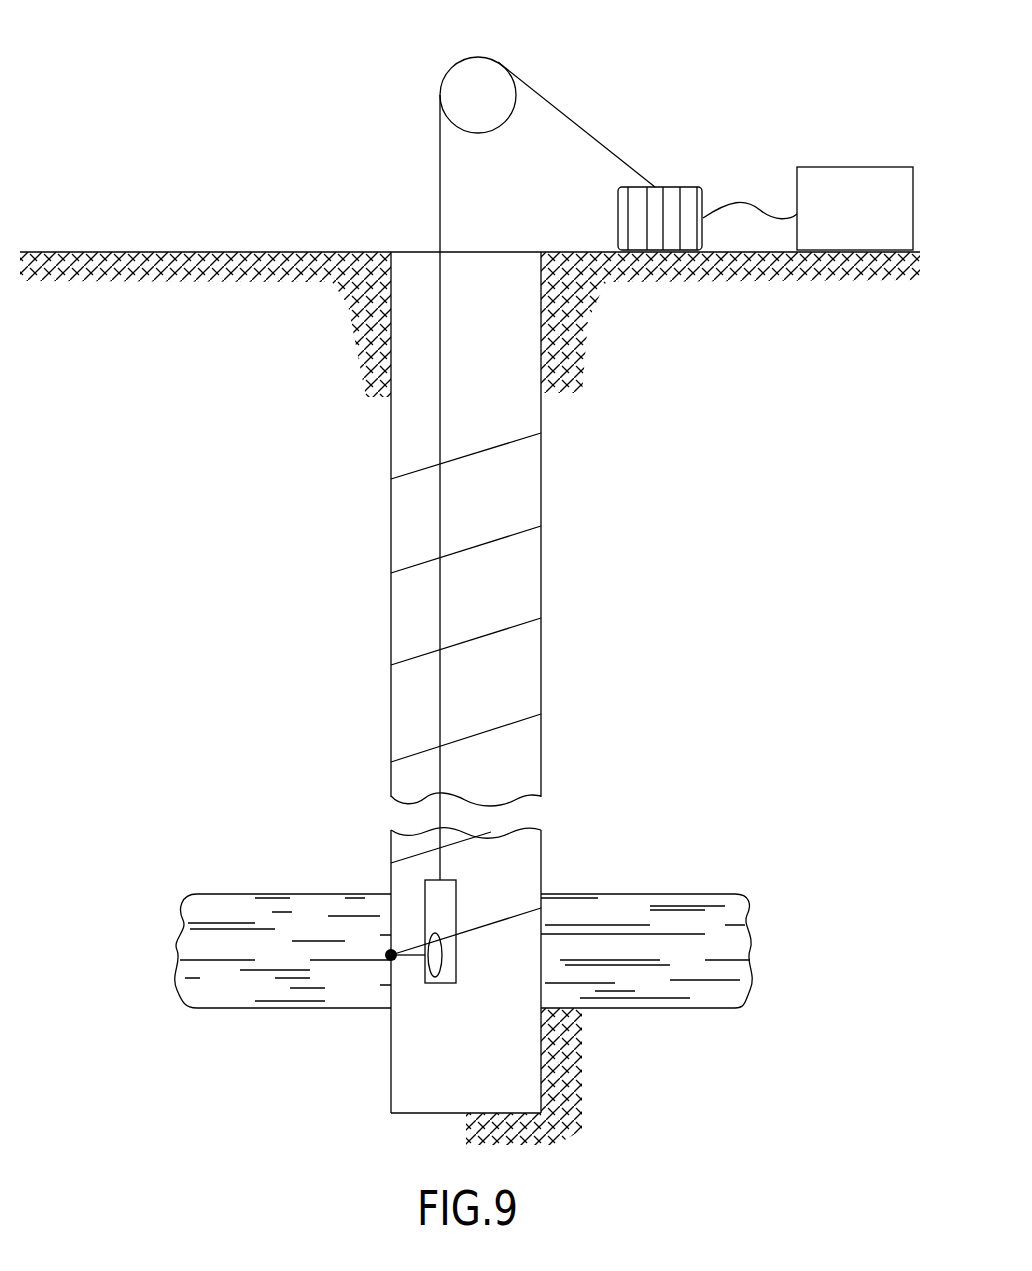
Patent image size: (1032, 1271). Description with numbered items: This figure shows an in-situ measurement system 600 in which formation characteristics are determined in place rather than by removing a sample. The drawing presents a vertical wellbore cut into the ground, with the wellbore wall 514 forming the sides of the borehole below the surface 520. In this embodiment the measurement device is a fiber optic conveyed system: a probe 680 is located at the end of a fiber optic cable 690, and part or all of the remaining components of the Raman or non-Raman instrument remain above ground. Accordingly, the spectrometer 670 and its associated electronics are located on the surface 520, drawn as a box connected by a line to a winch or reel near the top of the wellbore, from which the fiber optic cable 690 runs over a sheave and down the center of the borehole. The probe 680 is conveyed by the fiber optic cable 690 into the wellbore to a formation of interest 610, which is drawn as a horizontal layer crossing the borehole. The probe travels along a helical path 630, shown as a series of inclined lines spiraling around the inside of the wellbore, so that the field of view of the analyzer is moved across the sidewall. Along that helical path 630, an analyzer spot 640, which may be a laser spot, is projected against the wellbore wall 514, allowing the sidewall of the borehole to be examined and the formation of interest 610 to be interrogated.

The in-situ measurement system 600 is at (291, 83).
The surface 520 is at (287, 250).
The fiber optic cable 690 is at (598, 140).
The spectrometer 670 is at (858, 166).
The wellbore wall 514 is at (391, 434).
The helical path 630 is at (412, 565).
The analyzer spot 640 is at (388, 954).
The formation of interest 610 is at (692, 893).
The probe 680 is at (456, 960).